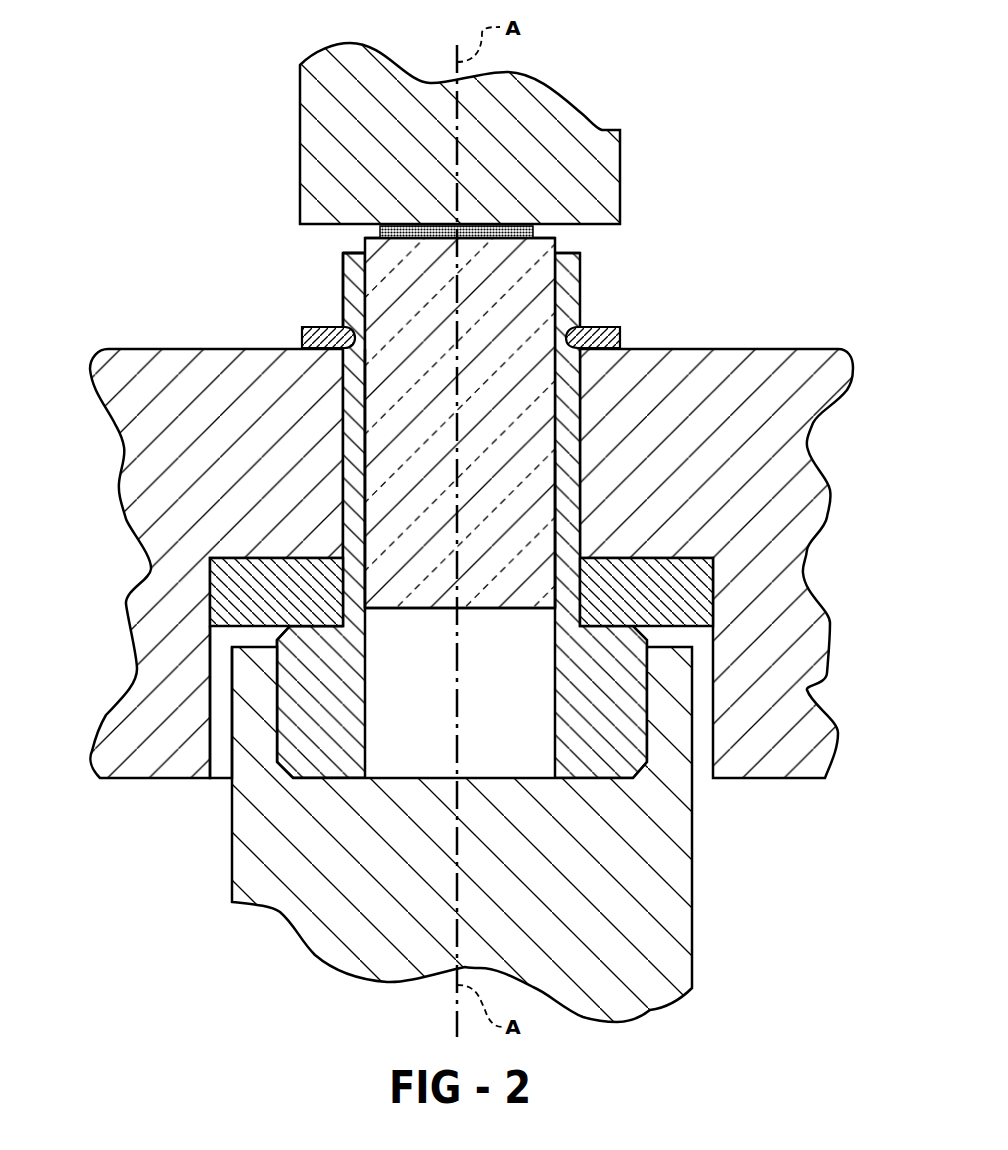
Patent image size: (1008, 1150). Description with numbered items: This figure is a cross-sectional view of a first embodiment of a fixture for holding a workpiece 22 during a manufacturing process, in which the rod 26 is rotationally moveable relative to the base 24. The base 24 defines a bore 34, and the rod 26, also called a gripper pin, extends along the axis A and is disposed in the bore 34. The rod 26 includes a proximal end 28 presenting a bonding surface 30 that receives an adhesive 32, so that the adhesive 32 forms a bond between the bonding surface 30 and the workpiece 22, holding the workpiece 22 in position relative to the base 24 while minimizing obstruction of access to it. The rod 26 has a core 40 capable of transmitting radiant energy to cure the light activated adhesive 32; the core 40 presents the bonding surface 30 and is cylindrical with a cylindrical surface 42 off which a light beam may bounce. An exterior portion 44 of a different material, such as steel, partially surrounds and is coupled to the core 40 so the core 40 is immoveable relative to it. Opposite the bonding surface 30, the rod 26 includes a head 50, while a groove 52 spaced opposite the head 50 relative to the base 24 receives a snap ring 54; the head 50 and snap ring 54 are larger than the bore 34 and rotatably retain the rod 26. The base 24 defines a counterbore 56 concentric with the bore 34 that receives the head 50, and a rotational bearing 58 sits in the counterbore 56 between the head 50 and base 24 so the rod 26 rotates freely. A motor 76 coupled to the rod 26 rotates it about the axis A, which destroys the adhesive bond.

The workpiece 22 is at (553, 97).
The base 24 is at (730, 368).
The rod 26 is at (507, 248).
The proximal end 28 is at (343, 252).
The bonding surface 30 is at (480, 226).
The adhesive 32 is at (398, 226).
The bore 34 is at (342, 425).
The core 40 is at (478, 540).
The cylindrical surface 42 is at (550, 518).
The exterior portion 44 is at (360, 540).
The head 50 is at (297, 743).
The groove 52 is at (348, 322).
The snap ring 54 is at (303, 338).
The counterbore 56 is at (217, 730).
The rotational bearing 58 is at (687, 595).
The motor 76 is at (660, 900).